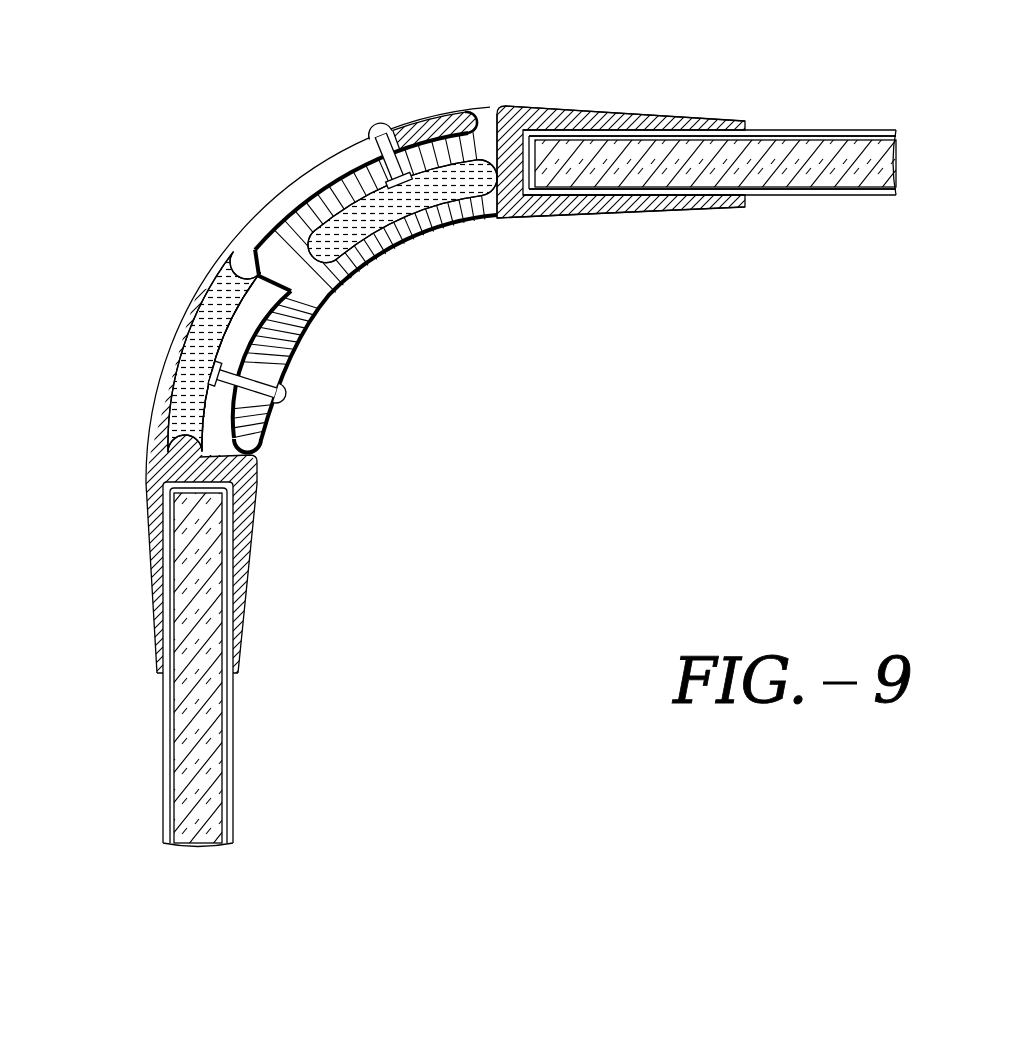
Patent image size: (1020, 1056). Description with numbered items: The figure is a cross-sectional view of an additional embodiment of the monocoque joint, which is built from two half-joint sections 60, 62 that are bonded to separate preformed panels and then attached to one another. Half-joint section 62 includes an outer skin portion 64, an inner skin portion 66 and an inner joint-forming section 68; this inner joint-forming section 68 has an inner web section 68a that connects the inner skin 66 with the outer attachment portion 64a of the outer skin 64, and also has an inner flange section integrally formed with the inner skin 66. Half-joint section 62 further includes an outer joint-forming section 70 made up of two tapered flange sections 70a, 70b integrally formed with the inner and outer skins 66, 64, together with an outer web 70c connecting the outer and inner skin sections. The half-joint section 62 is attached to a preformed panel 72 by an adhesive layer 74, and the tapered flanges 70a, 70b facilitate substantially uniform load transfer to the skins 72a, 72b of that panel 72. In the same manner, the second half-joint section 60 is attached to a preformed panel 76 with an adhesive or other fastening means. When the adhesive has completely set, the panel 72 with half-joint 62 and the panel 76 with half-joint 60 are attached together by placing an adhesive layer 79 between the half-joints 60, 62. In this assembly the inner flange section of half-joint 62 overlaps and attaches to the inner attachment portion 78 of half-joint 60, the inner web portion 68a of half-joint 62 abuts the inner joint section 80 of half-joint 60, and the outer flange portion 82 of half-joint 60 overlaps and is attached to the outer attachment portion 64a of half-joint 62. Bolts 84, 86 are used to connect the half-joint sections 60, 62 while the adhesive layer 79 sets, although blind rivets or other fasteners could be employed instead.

The half-joint section 60 is at (148, 312).
The half-joint section 62 is at (398, 268).
The outer skin portion 64 is at (455, 150).
The outer attachment portion 64a is at (338, 170).
The inner skin portion 66 is at (477, 228).
The inner joint-forming section 68 is at (320, 290).
The inner web section 68a is at (260, 262).
The outer joint-forming section 70 is at (520, 113).
The tapered flange section 70a is at (613, 217).
The tapered flange section 70b is at (610, 120).
The outer web 70c is at (507, 163).
The preformed panel 72 is at (803, 153).
The skin of preformed panel 72a is at (797, 193).
The skin of preformed panel 72b is at (775, 137).
The adhesive layer 74 is at (706, 205).
The preformed panel 76 is at (205, 760).
The inner attachment portion 78 is at (222, 293).
The adhesive layer 79 is at (330, 182).
The inner joint section 80 is at (257, 313).
The outer flange portion 82 is at (418, 121).
The bolt 84 is at (420, 222).
The bolt 86 is at (206, 372).